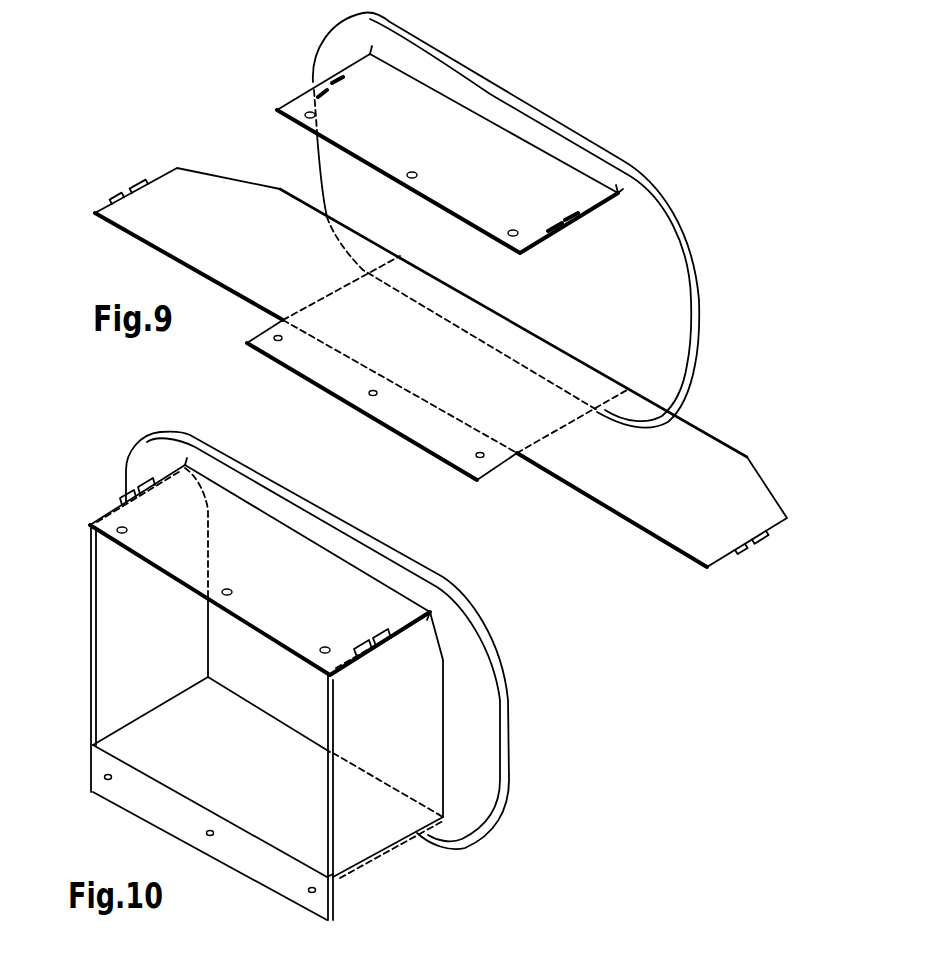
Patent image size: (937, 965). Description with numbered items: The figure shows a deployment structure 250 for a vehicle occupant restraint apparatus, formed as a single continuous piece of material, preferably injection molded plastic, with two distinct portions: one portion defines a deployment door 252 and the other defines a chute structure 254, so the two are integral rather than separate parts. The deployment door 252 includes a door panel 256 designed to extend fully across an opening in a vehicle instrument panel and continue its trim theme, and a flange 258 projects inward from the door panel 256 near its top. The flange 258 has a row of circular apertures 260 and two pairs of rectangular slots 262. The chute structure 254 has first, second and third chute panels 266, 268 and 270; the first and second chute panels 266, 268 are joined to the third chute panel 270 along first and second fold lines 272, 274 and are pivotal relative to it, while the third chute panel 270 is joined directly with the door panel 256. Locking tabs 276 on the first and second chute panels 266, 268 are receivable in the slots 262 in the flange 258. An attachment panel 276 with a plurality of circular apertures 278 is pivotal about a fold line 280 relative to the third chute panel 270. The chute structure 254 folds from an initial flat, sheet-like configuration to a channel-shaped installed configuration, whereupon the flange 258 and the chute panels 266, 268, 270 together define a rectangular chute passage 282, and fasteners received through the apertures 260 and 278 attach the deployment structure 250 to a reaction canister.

In FIG. 9, the deployment structure 250 is at (724, 214).
In FIG. 10, the deployment structure 250 is at (525, 694).
In FIG. 9, the deployment door 252 is at (705, 275).
In FIG. 10, the deployment door 252 is at (515, 719).
In FIG. 9, the chute structure 254 is at (748, 451).
In FIG. 10, the chute structure 254 is at (358, 866).
In FIG. 9, the door panel 256 is at (654, 178).
In FIG. 10, the door panel 256 is at (488, 633).
In FIG. 9, the flange 258 is at (543, 170).
In FIG. 10, the flange 258 is at (173, 562).
In FIG. 9, the circular apertures 260 is at (505, 228).
In FIG. 10, the circular apertures 260 is at (134, 530).
In FIG. 9, the rectangular slots 262 is at (322, 73).
In FIG. 9, the first chute panel 266 is at (186, 234).
In FIG. 10, the first chute panel 266 is at (90, 647).
In FIG. 9, the second chute panel 268 is at (655, 519).
In FIG. 10, the second chute panel 268 is at (423, 741).
In FIG. 9, the third chute panel 270 is at (342, 329).
In FIG. 10, the third chute panel 270 is at (137, 742).
In FIG. 9, the first fold line 272 is at (345, 284).
In FIG. 10, the first fold line 272 is at (159, 706).
In FIG. 9, the second fold line 274 is at (573, 420).
In FIG. 10, the second fold line 274 is at (393, 838).
In FIG. 9, the locking tabs 276 is at (120, 187).
In FIG. 10, the locking tabs 276 is at (137, 496).
In FIG. 9, the circular apertures 278 is at (283, 345).
In FIG. 10, the circular apertures 278 is at (100, 776).
In FIG. 9, the fold line 280 is at (457, 419).
In FIG. 10, the fold line 280 is at (180, 797).
In FIG. 10, the rectangular chute passage 282 is at (282, 691).